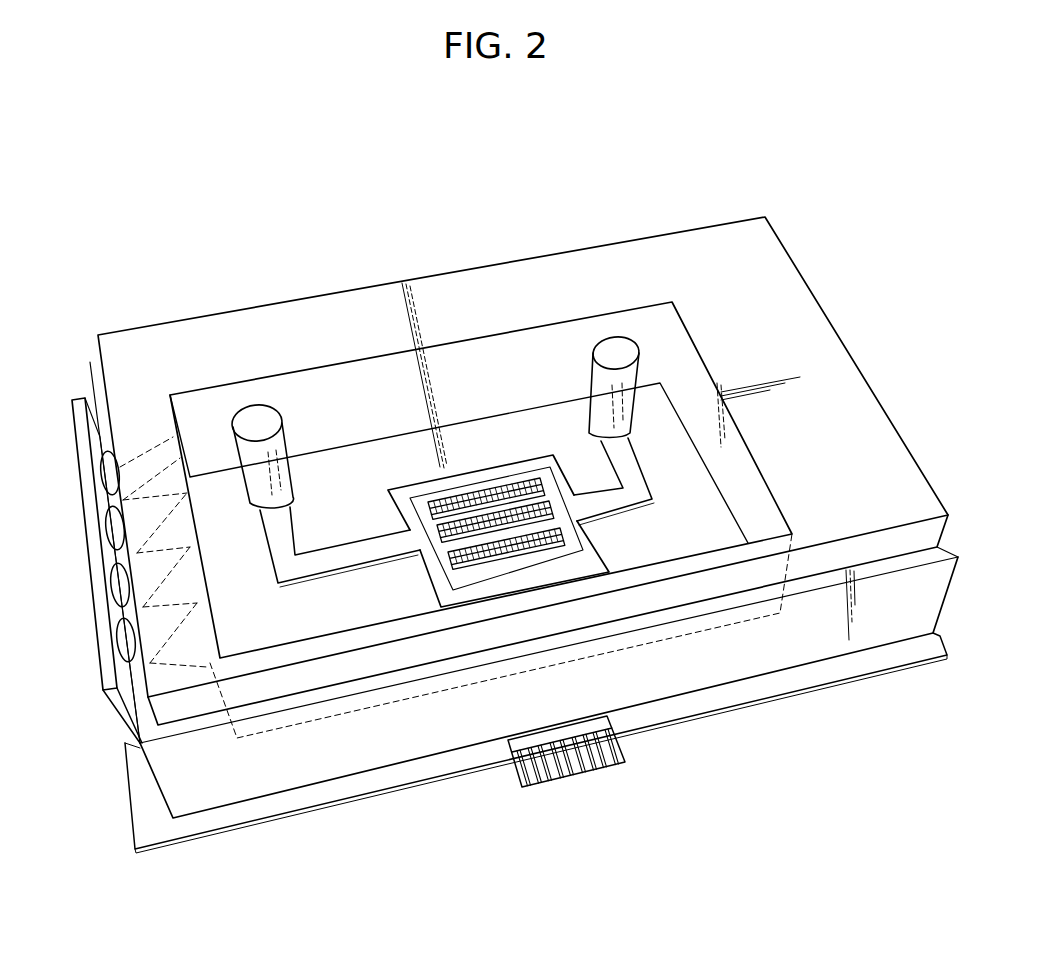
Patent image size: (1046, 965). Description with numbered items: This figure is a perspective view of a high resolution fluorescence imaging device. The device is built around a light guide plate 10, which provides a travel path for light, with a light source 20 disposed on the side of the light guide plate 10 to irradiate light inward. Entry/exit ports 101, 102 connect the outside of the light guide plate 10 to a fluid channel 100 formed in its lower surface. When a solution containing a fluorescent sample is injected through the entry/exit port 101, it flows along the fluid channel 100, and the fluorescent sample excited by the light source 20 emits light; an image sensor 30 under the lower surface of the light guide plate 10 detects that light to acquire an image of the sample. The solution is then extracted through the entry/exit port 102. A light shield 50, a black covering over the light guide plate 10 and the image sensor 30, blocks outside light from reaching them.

The light guide plate 10 is at (462, 378).
The light source 20 is at (80, 413).
The image sensor 30 is at (568, 557).
The light shield 50 is at (820, 347).
The fluid channel 100 is at (333, 562).
The entry/exit port 101 is at (255, 413).
The entry/exit port 102 is at (615, 352).